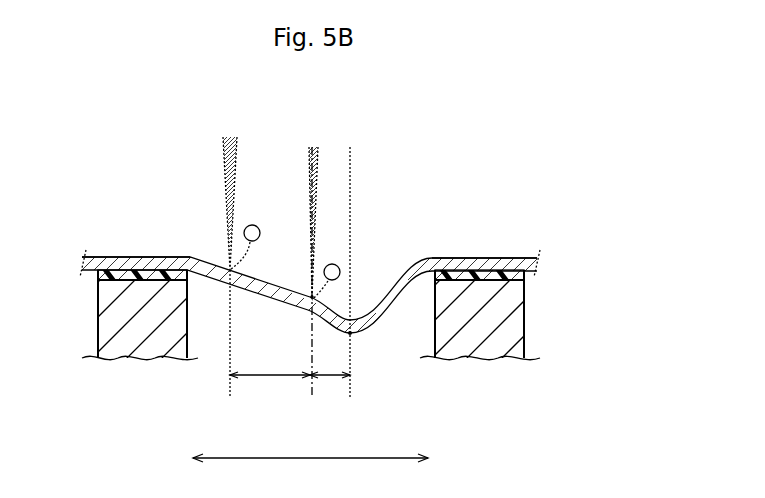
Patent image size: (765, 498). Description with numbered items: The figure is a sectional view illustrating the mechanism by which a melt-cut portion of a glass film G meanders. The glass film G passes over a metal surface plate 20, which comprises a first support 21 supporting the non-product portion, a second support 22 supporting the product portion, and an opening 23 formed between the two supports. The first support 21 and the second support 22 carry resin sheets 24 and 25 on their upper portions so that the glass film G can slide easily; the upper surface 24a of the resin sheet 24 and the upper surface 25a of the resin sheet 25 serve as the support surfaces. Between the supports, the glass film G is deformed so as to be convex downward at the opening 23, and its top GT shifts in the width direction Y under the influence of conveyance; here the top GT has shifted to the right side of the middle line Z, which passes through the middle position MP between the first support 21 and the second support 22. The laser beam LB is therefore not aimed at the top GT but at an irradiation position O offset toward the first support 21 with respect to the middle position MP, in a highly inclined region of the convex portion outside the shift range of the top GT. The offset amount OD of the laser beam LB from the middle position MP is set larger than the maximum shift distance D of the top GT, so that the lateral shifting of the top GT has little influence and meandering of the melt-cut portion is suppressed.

The surface plate 20 is at (105, 377).
The first support 21 is at (100, 306).
The second support 22 is at (512, 315).
The opening 23 is at (420, 300).
The resin sheet 24 is at (158, 270).
The upper surface 24a is at (130, 258).
The resin sheet 25 is at (471, 270).
The upper surface 25a is at (497, 258).
The laser beam LB is at (223, 152).
The middle line Z is at (315, 158).
The irradiation position O is at (285, 262).
The middle position MP is at (304, 300).
The top GT is at (355, 340).
The glass film G is at (175, 262).
The offset amount OD is at (290, 275).
The shift range D is at (334, 393).
The width direction Y is at (310, 444).